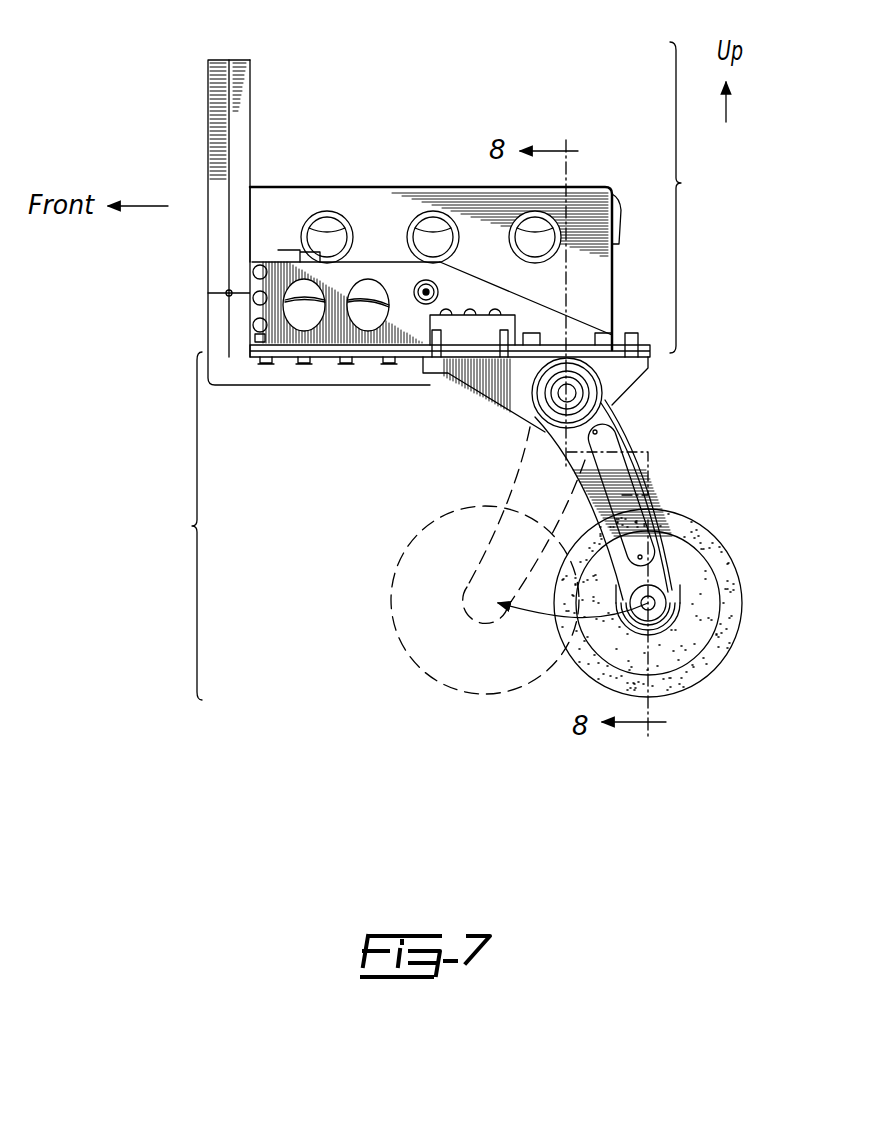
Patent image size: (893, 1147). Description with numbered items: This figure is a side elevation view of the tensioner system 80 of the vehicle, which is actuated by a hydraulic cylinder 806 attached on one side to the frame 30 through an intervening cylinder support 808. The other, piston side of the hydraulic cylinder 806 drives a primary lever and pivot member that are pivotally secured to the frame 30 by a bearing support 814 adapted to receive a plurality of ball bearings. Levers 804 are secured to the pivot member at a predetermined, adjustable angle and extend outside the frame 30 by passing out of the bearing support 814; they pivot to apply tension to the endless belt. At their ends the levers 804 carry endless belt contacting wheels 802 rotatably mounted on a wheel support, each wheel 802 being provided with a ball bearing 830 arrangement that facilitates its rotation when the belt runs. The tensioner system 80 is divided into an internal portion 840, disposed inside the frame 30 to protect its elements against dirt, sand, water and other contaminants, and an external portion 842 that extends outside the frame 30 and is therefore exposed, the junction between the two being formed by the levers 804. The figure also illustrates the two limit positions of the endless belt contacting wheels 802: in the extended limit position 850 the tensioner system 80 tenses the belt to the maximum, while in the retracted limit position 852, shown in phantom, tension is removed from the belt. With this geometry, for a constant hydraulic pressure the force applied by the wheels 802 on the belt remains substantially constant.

The frame 30 is at (214, 95).
The tensioner system 80 is at (158, 150).
The endless belt contacting wheel 802 is at (722, 545).
The lever 804 is at (613, 432).
The hydraulic cylinder 806 is at (328, 243).
The cylinder support 808 is at (250, 312).
The bearing support 814 is at (452, 382).
The ball bearing 830 is at (652, 602).
The internal portion 840 is at (700, 197).
The external portion 842 is at (166, 526).
The extended limit position 850 is at (703, 673).
The retracted limit position 852 is at (388, 629).